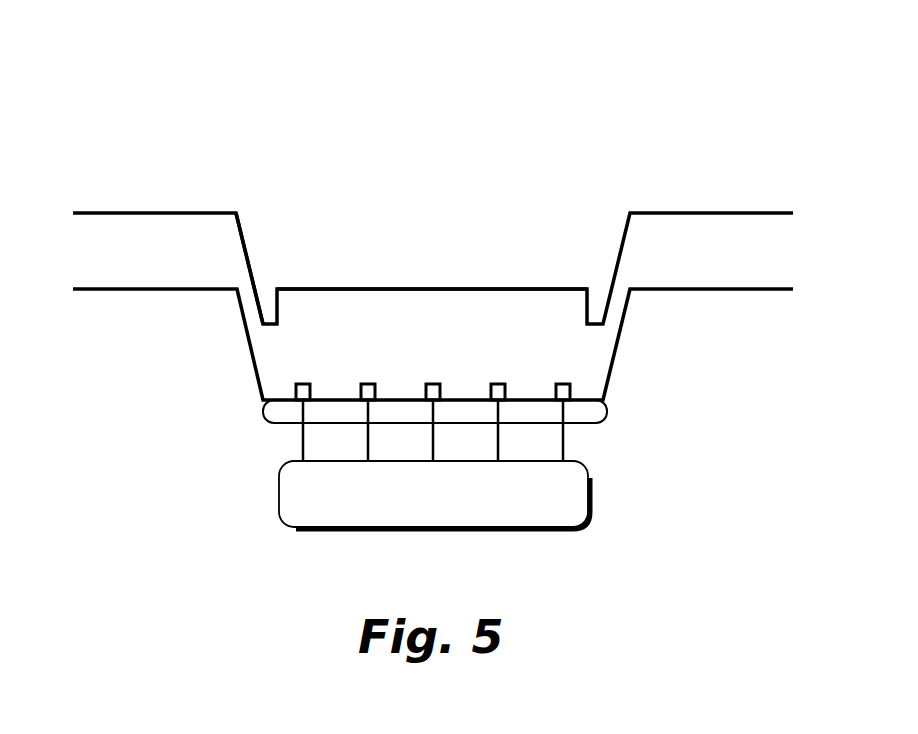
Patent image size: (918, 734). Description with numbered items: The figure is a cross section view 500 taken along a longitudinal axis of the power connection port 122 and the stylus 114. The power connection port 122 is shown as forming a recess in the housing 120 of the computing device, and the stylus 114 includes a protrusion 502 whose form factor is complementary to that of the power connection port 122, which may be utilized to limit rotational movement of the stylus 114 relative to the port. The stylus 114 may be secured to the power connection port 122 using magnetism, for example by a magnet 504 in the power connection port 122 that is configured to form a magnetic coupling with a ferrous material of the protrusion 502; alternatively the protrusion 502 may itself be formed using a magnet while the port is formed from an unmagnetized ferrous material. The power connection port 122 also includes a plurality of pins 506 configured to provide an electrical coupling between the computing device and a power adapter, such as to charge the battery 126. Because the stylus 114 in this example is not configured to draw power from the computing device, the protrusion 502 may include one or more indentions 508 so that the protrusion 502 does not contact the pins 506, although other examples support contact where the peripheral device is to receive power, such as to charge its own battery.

The cross section view 500 is at (157, 92).
The stylus 114 is at (750, 210).
The housing 120 is at (172, 292).
The protrusion 502 is at (247, 245).
The indentions 508 is at (435, 288).
The power connection port 122 is at (252, 453).
The magnet 504 is at (587, 415).
The pins 506 is at (399, 362).
The battery 126 is at (434, 495).